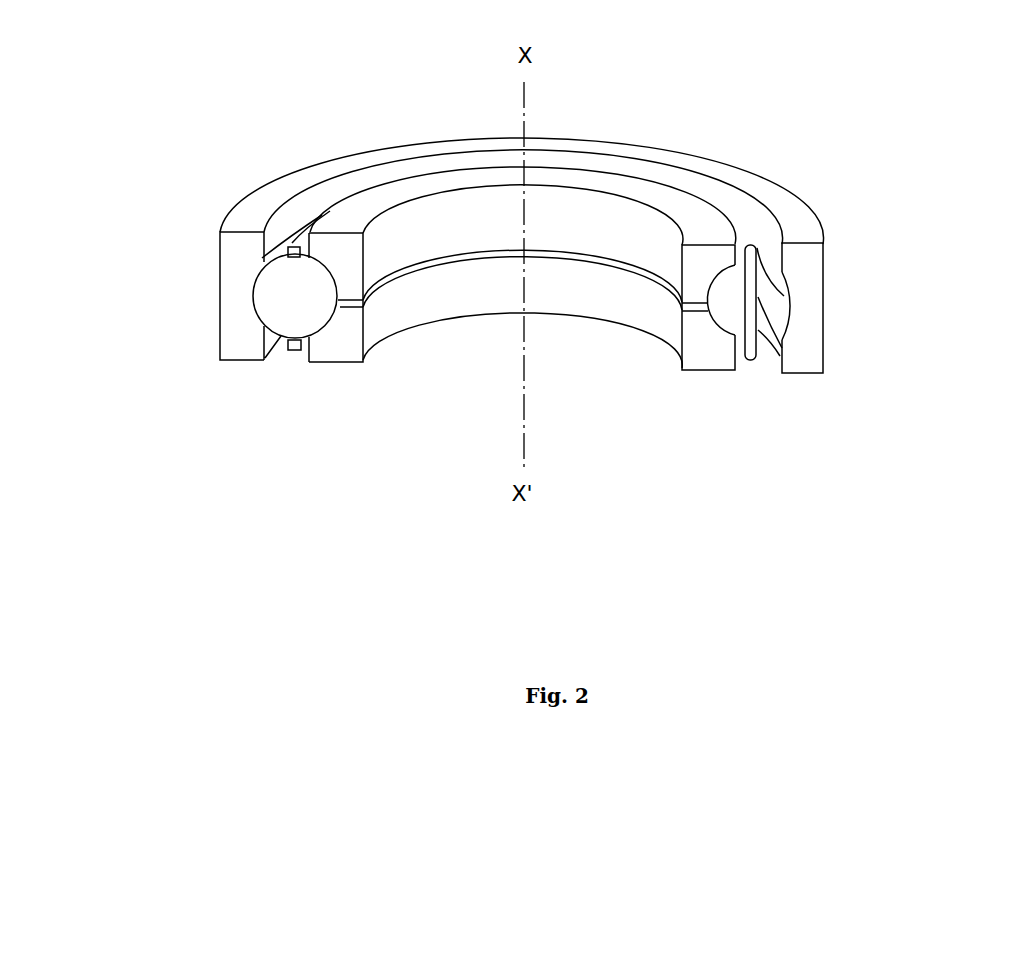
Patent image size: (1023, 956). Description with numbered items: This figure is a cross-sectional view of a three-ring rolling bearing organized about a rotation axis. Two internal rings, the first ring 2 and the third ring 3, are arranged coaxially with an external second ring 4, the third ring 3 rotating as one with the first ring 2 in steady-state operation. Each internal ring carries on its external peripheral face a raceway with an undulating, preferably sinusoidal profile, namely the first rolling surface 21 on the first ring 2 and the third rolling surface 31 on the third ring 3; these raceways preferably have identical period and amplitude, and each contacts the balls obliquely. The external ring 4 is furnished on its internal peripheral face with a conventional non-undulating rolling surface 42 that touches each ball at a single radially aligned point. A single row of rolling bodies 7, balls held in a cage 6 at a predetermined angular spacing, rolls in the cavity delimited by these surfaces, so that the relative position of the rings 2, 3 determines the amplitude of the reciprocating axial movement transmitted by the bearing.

The first ring 2 is at (689, 275).
The first rolling surface 21 is at (712, 283).
The third ring 3 is at (708, 355).
The third rolling surface 31 is at (711, 328).
The second ring 4 is at (822, 306).
The rolling surface of the external ring 42 is at (790, 290).
The cage 6 is at (752, 253).
The rolling bodies 7 is at (283, 289).